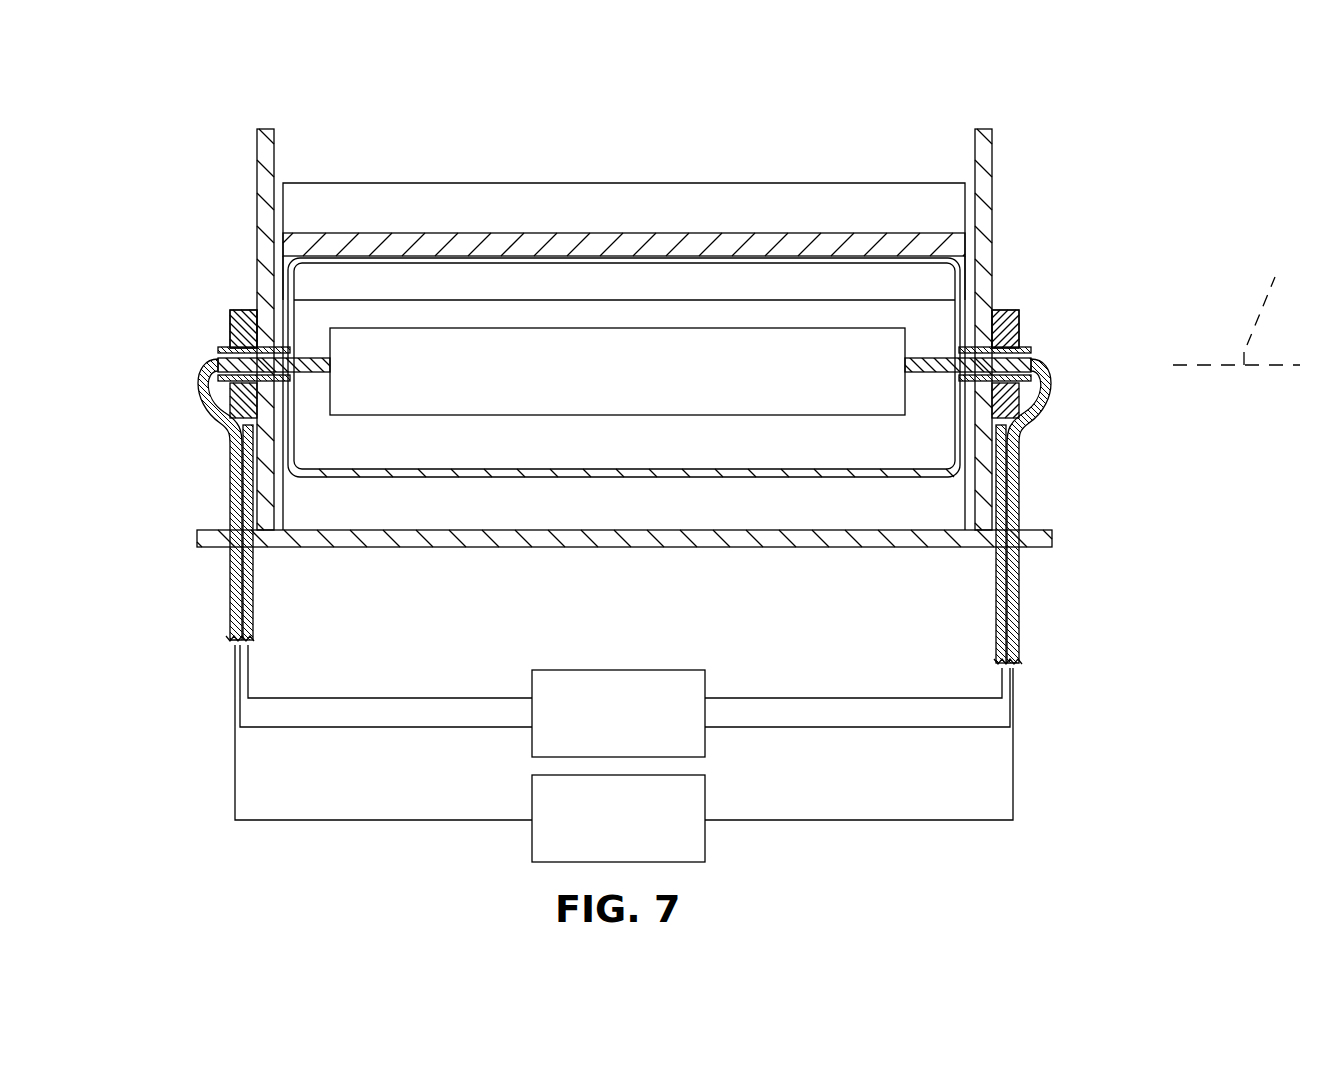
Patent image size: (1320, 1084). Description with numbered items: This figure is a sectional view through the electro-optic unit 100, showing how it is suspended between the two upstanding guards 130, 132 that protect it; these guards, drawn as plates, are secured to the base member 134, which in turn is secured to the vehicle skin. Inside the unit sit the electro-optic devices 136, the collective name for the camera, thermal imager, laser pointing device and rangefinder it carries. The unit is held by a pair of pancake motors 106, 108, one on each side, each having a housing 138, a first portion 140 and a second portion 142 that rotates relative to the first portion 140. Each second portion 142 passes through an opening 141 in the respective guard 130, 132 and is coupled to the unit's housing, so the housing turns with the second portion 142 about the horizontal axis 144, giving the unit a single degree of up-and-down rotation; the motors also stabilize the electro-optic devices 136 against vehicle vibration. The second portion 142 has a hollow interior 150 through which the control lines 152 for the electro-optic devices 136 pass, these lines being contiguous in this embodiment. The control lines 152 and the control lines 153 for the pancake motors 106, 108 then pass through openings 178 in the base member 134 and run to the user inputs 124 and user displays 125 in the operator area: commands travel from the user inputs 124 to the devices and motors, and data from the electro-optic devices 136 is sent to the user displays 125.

The electro-optic unit 100 is at (462, 480).
The pancake motor 106 is at (185, 300).
The pancake motor 108 is at (1085, 280).
The user inputs 124 is at (705, 745).
The user displays 125 is at (532, 835).
The upstanding guard 130 is at (993, 147).
The upstanding guard 132 is at (258, 157).
The base member 134 is at (735, 548).
The electro-optic devices 136 is at (622, 408).
The housing 138 is at (243, 310).
The first portion 140 is at (232, 318).
The opening 141 is at (268, 345).
The second portion 142 is at (222, 347).
The axis 144 is at (1237, 305).
The hollow interior 150 is at (222, 364).
The control lines 152 is at (205, 405).
The control lines 153 is at (250, 625).
The openings 178 is at (255, 550).